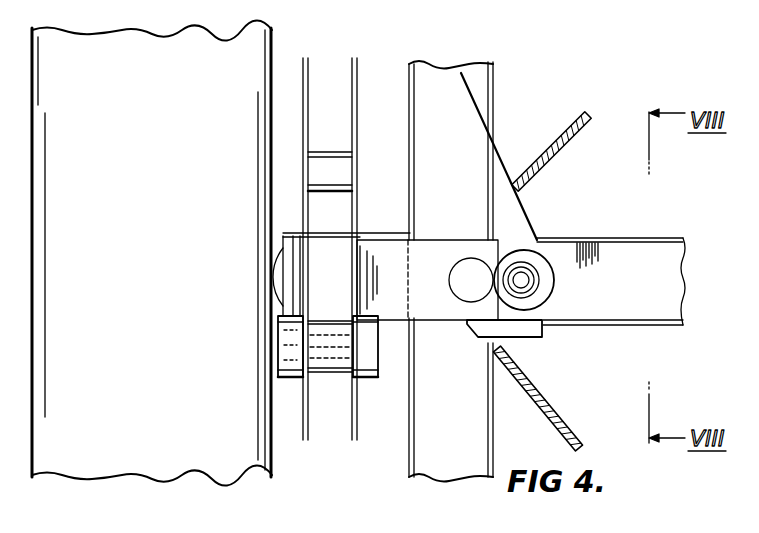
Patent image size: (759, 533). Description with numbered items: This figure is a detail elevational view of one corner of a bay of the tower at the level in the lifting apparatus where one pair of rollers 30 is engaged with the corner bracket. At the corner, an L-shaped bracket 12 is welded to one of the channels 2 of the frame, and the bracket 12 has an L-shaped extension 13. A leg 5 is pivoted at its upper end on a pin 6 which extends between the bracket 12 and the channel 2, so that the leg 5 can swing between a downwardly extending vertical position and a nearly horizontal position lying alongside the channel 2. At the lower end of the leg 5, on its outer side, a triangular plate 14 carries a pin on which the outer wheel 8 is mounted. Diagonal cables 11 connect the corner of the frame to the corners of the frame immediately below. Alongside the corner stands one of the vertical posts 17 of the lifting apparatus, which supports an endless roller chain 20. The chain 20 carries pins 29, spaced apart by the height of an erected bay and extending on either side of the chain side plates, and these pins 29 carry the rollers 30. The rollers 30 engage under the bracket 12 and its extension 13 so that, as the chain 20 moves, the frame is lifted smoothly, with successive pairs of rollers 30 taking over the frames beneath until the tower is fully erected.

The channel 2 is at (626, 263).
The leg 5 is at (420, 92).
The pin 6 is at (473, 258).
The outer wheel 8 is at (545, 257).
The diagonal cable 11 is at (560, 146).
The L-shaped bracket 12 is at (443, 318).
The L-shaped extension 13 is at (292, 250).
The triangular plate 14 is at (483, 141).
The vertical post 17 is at (258, 443).
The endless roller chain 20 is at (306, 408).
The pin 29 is at (278, 345).
The roller 30 is at (292, 361).